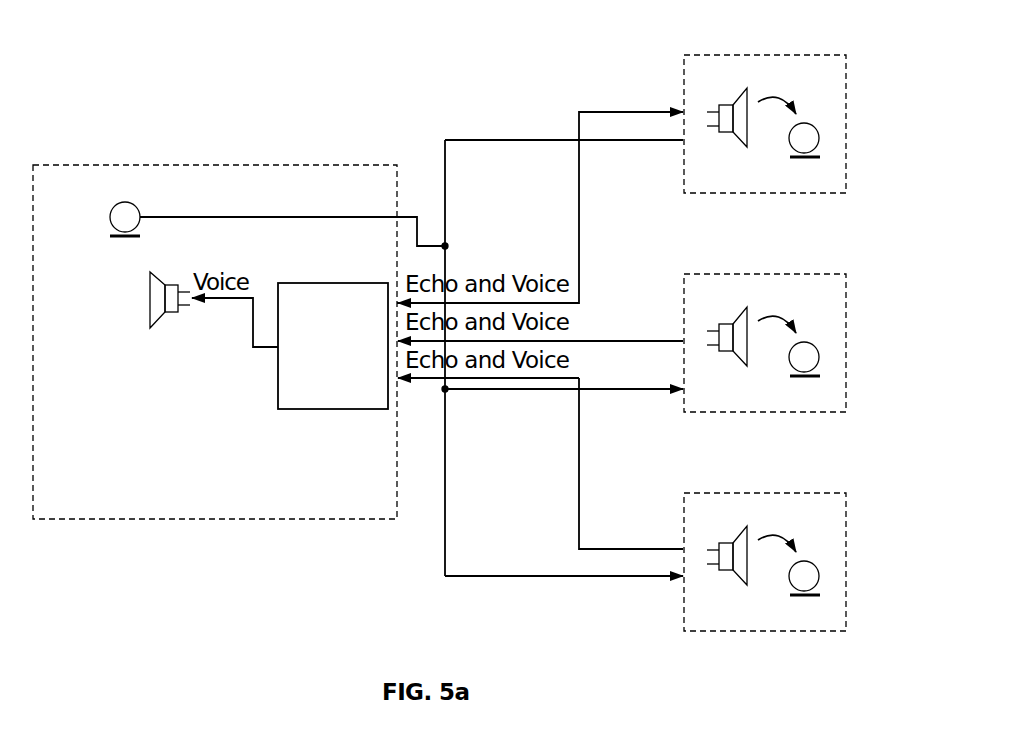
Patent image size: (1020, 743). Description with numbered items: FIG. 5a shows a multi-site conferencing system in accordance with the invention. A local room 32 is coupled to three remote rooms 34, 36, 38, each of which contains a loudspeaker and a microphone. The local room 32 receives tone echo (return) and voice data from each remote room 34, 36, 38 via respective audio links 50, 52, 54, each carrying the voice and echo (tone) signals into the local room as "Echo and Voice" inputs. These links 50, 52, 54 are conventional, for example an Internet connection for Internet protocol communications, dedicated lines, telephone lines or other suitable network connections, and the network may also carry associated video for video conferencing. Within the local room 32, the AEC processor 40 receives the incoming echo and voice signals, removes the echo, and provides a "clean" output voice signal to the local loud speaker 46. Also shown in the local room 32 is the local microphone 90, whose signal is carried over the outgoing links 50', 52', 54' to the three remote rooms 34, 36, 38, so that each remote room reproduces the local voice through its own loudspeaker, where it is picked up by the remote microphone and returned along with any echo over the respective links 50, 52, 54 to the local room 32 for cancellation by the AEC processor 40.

The local room 32 is at (85, 165).
The remote room 34 is at (737, 55).
The remote room 36 is at (737, 274).
The remote room 38 is at (737, 493).
The AEC processor 40 is at (325, 283).
The local loud speaker 46 is at (176, 312).
The audio link 50 is at (540, 192).
The audio link 50' is at (564, 155).
The audio link 52 is at (540, 326).
The audio link 52' is at (564, 404).
The audio link 54 is at (540, 463).
The audio link 54' is at (564, 592).
The local microphone 90 is at (120, 203).